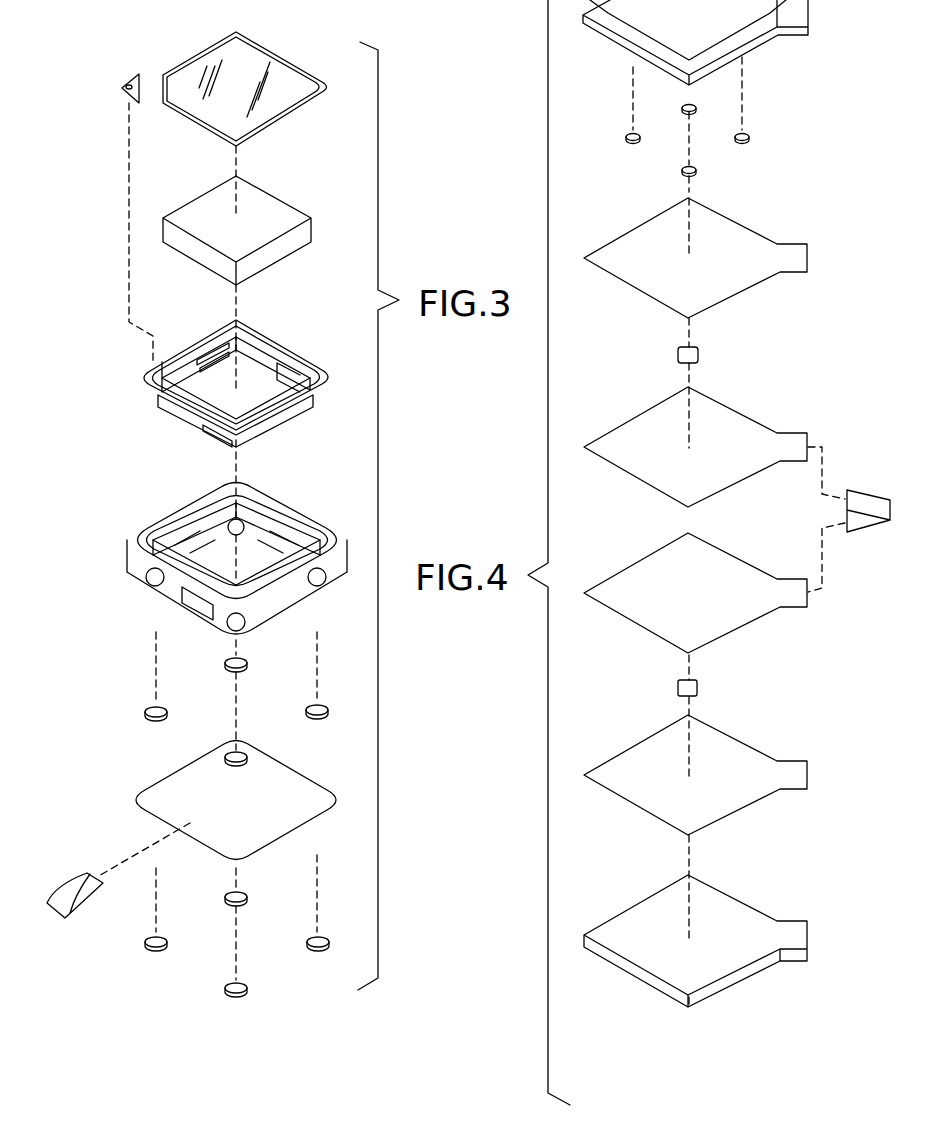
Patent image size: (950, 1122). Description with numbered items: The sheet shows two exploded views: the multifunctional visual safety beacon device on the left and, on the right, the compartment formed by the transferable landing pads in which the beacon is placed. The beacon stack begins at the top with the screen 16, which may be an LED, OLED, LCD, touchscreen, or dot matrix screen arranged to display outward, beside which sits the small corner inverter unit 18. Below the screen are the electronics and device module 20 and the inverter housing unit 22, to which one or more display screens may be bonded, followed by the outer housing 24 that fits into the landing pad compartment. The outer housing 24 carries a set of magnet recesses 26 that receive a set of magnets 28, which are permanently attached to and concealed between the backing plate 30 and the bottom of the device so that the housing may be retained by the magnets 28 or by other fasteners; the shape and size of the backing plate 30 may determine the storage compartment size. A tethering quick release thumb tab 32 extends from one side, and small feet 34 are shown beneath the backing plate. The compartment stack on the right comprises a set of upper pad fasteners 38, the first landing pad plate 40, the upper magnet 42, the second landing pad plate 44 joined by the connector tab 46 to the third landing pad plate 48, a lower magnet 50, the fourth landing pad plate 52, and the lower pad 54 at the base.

In FIG. 3, the screen 16 is at (252, 50).
In FIG. 3, the corner inverter unit 18 is at (135, 78).
In FIG. 3, the electronics and device module 20 is at (271, 207).
In FIG. 3, the inverter housing unit 22 is at (272, 333).
In FIG. 3, the outer housing 24 is at (284, 503).
In FIG. 3, the magnet recesses 26 is at (145, 597).
In FIG. 3, the magnets 28 is at (152, 707).
In FIG. 3, the backing plate 30 is at (157, 790).
In FIG. 3, the tethering quick release thumb tab 32 is at (87, 883).
In FIG. 3, the foot 34 is at (152, 950).
In FIG. 4, the upper pad fasteners 38 is at (630, 133).
In FIG. 4, the first landing pad plate 40 is at (747, 238).
In FIG. 4, the upper magnet 42 is at (678, 353).
In FIG. 4, the second landing pad plate 44 is at (747, 425).
In FIG. 4, the connector tab 46 is at (873, 500).
In FIG. 4, the third landing pad plate 48 is at (747, 572).
In FIG. 4, the lower magnet 50 is at (680, 683).
In FIG. 4, the fourth landing pad plate 52 is at (747, 753).
In FIG. 4, the lower pad 54 is at (745, 913).